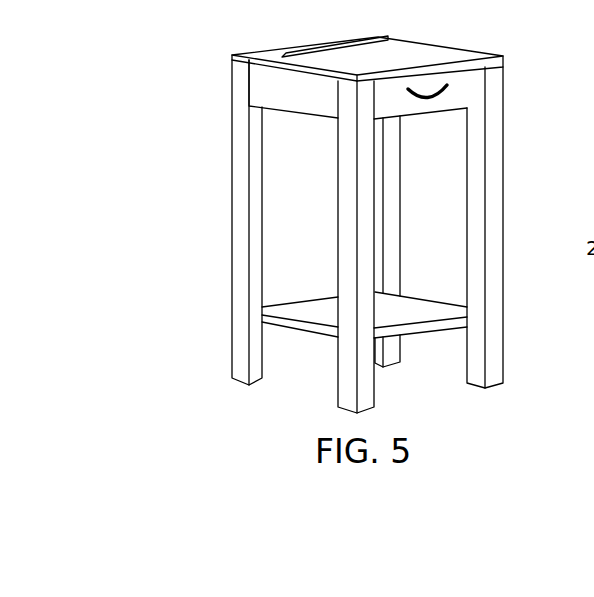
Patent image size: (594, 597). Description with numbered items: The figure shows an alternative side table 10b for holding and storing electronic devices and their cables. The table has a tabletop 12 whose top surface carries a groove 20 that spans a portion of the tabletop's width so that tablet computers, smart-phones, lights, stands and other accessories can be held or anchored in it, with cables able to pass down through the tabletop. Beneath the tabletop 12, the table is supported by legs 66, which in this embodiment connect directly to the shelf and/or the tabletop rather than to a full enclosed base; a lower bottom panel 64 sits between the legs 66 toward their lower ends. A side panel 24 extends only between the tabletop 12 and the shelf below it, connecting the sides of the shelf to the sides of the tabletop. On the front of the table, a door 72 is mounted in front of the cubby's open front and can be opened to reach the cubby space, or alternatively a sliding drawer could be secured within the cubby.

The side table 10b is at (353, 206).
The tabletop 12 is at (343, 45).
The groove 20 is at (332, 50).
The side panel 24 is at (267, 97).
The bottom panel 64 is at (312, 312).
The legs 66 is at (347, 217).
The door 72 is at (465, 80).